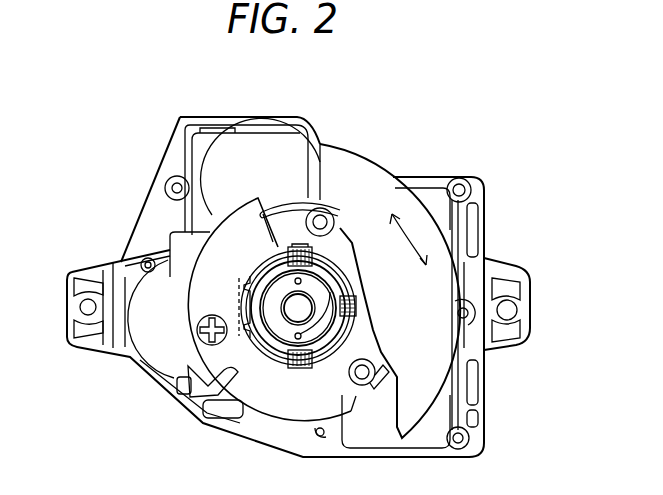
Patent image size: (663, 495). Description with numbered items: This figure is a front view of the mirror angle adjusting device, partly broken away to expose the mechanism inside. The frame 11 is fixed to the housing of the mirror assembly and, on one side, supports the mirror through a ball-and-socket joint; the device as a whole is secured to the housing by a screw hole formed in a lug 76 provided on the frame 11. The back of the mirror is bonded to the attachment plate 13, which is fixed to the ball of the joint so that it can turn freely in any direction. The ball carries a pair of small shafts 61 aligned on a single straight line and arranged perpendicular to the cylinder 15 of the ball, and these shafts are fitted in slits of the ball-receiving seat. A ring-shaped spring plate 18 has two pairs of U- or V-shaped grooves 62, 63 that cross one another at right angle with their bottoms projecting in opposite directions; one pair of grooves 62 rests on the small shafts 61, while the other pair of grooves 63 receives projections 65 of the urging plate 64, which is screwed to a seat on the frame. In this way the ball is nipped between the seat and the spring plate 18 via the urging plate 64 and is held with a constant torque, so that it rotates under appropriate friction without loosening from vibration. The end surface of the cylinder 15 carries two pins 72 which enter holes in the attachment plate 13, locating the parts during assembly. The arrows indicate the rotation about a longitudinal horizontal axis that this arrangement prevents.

The frame 11 is at (263, 112).
The attachment plate 13 is at (377, 173).
The cylinder 15 is at (330, 330).
The spring plate 18 is at (337, 272).
The small shafts 61 is at (302, 248).
The grooves 62 is at (323, 248).
The grooves 63 is at (262, 276).
The urging plate 64 is at (248, 222).
The projections 65 is at (255, 340).
The pins 72 is at (303, 281).
The lug 76 is at (80, 343).